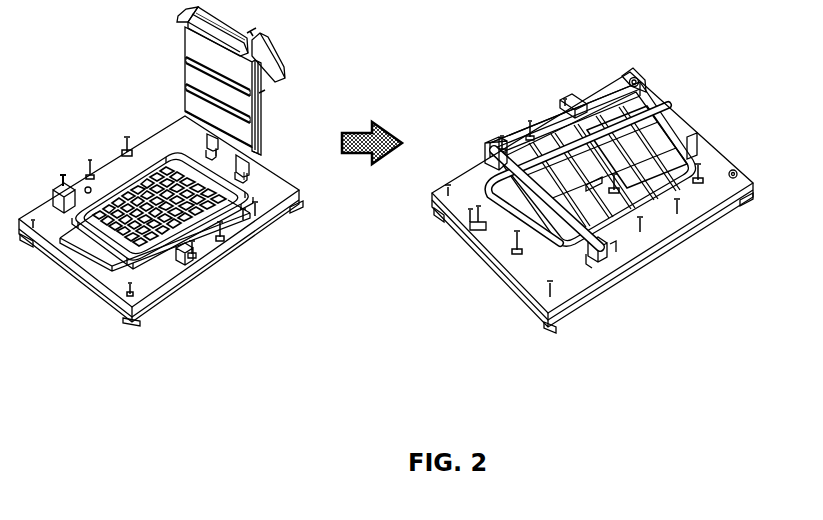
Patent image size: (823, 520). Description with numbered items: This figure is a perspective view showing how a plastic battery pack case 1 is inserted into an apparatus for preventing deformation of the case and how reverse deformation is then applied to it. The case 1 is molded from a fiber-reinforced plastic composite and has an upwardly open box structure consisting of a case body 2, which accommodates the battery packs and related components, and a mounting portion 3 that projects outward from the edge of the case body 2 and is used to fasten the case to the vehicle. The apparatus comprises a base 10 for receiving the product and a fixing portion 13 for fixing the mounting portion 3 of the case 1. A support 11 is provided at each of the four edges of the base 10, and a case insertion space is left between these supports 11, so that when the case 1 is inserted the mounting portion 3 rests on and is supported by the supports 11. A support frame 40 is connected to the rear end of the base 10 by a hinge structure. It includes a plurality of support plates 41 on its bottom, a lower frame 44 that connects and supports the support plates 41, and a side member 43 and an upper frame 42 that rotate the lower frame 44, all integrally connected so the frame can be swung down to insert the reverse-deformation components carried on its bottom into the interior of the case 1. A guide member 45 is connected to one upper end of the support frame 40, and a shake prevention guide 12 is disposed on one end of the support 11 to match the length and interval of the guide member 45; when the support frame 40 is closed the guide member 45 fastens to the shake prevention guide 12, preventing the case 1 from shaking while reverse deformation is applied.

The case 1 is at (162, 139).
The case body 2 is at (113, 240).
The mounting portion 3 is at (86, 188).
The base 10 is at (212, 273).
The support 11 is at (115, 160).
The shake prevention guide 12 is at (180, 264).
The fixing portion 13 is at (90, 160).
The support frame 40 is at (172, 58).
The support plate 41 is at (192, 43).
The upper frame 42 is at (633, 72).
The side member 43 is at (632, 168).
The lower frame 44 is at (640, 237).
The guide member 45 is at (577, 245).